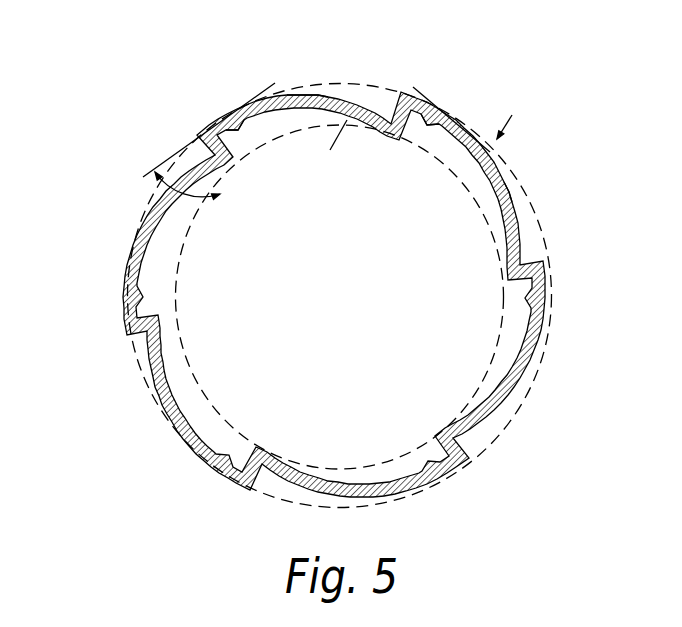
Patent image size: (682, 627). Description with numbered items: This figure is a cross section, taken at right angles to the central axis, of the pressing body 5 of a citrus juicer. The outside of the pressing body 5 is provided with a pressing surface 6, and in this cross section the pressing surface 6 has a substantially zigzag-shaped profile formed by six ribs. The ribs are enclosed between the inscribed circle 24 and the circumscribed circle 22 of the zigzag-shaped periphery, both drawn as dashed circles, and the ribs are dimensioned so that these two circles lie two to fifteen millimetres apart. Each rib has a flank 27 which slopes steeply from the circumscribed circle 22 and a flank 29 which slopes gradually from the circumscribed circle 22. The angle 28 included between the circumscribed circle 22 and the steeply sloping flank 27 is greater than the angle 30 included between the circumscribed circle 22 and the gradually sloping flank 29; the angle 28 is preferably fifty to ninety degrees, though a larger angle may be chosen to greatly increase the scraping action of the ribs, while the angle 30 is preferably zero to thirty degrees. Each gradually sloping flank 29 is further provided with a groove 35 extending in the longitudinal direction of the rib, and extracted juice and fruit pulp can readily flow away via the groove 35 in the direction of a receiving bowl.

The pressing body 5 is at (100, 62).
The pressing surface 6 is at (160, 412).
The circumscribed circle 22 is at (535, 228).
The inscribed circle 24 is at (400, 460).
The steeply sloping flank 27 is at (197, 152).
The angle 28 is at (183, 195).
The gradually sloping flank 29 is at (317, 94).
The angle 30 is at (492, 155).
The groove 35 is at (229, 119).